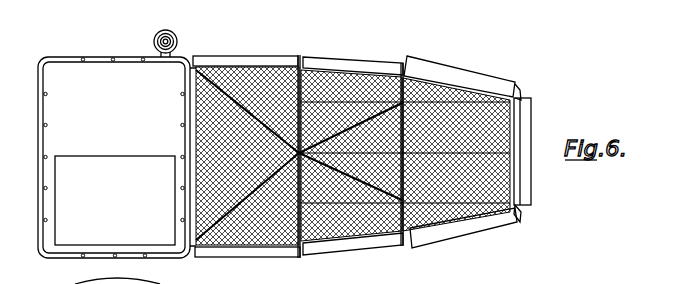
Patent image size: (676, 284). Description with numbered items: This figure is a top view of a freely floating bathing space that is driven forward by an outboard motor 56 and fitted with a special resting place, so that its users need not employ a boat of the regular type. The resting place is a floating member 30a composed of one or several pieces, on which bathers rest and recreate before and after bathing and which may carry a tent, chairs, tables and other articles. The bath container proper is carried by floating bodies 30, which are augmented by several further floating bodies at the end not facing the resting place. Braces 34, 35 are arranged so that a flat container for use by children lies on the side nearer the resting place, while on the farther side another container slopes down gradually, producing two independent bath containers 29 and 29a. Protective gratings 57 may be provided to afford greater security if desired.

The bath container 29 is at (330, 72).
The bath container 29a is at (222, 70).
The floating body 30 is at (272, 60).
The floating member 30a is at (65, 72).
The brace 34 is at (370, 240).
The brace 35 is at (225, 244).
The outboard motor 56 is at (166, 30).
The protective grating 57 is at (44, 107).